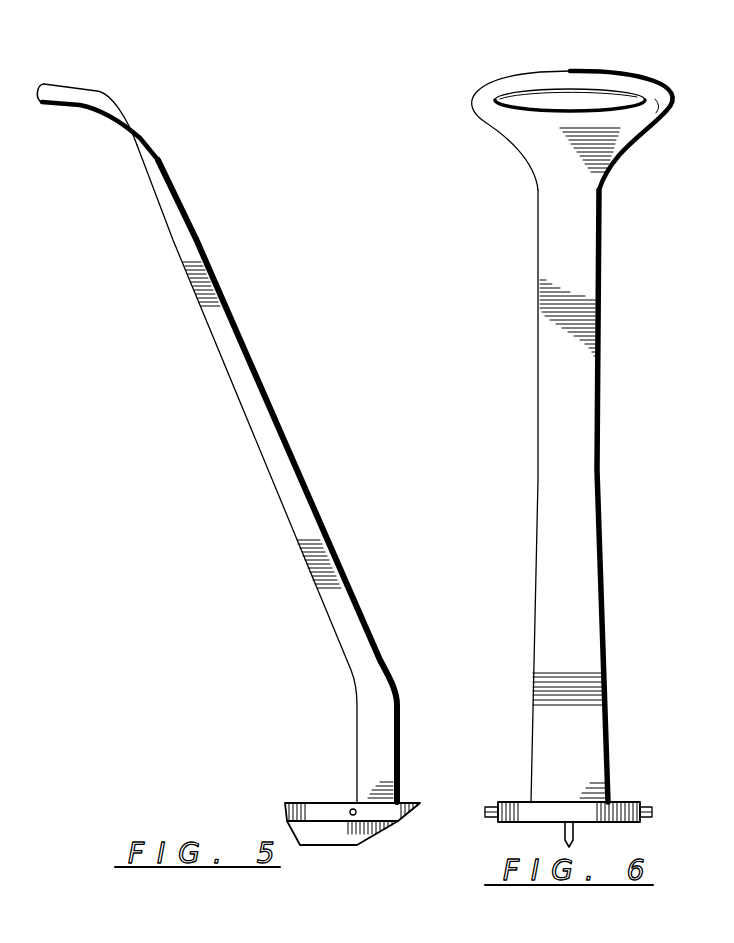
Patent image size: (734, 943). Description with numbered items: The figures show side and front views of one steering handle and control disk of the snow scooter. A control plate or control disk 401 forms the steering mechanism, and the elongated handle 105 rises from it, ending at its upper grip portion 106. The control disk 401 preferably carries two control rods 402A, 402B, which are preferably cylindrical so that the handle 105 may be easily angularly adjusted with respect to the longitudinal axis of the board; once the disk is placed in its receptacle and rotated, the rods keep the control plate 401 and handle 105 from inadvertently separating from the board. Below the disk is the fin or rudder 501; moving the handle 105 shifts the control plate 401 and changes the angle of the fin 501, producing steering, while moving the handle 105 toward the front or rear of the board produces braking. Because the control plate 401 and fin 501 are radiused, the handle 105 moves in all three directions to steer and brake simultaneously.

In FIG. 5, the handle 105 is at (240, 376).
In FIG. 6, the handle 105 is at (547, 395).
In FIG. 5, the handle end / finger grip 106 is at (97, 95).
In FIG. 6, the handle end / finger grip 106 is at (483, 93).
In FIG. 5, the control disk 401 is at (285, 808).
In FIG. 6, the control disk 401 is at (522, 802).
In FIG. 6, the control rod 402A is at (648, 807).
In FIG. 5, the control rod 402B is at (352, 809).
In FIG. 6, the control rod 402B is at (496, 804).
In FIG. 5, the fin or rudder 501 is at (318, 835).
In FIG. 6, the fin or rudder 501 is at (573, 832).